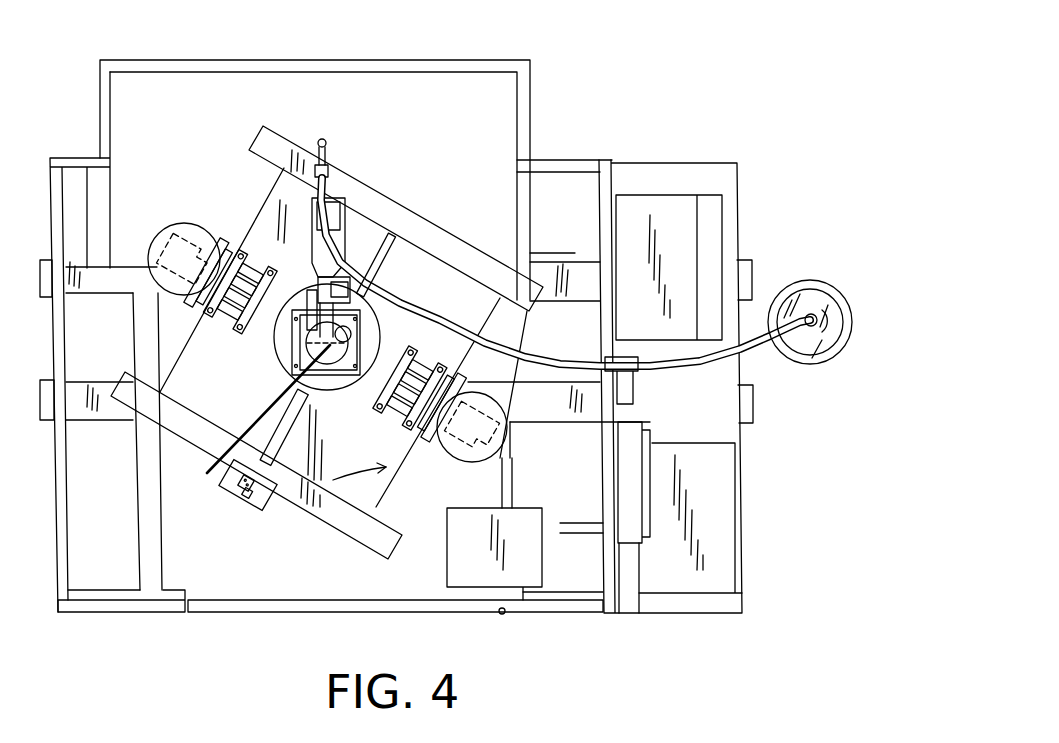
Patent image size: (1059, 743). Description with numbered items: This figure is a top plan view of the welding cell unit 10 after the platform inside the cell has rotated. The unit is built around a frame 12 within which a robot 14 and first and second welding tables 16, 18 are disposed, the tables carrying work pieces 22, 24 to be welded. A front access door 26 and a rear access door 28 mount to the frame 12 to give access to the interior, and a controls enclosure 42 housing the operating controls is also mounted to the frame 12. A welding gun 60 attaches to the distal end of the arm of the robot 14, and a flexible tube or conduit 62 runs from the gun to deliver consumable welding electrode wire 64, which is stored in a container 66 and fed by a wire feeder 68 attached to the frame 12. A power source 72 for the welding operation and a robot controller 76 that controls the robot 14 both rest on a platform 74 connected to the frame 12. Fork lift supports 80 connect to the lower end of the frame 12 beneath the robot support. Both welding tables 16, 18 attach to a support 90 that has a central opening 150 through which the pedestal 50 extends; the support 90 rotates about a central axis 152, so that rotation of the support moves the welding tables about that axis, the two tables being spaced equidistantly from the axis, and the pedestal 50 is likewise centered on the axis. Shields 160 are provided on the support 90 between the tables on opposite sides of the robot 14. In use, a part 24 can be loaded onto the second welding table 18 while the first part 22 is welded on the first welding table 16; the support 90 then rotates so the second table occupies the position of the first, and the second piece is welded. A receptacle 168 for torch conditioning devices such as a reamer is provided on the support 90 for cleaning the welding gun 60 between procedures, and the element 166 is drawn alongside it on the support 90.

The welding cell unit 10 is at (716, 50).
The frame 12 is at (542, 68).
The robot 14 is at (345, 215).
The first welding table 16 is at (168, 230).
The second welding table 18 is at (470, 457).
The work piece 22 is at (208, 232).
The work piece 24 is at (440, 450).
The front access door 26 is at (238, 610).
The rear access door 28 is at (230, 67).
The controls enclosure 42 is at (630, 537).
The pedestal 50 is at (300, 345).
The welding gun 60 is at (334, 147).
The flexible tube or conduit 62 is at (352, 233).
The consumable welding electrode wire 64 is at (832, 332).
The container 66 is at (823, 285).
The wire feeder 68 is at (628, 365).
The power source 72 is at (727, 517).
The platform 74 is at (728, 433).
The robot controller 76 is at (672, 205).
The fork lift supports 80 is at (80, 292).
The support 90 is at (345, 523).
The central opening 150 is at (370, 332).
The central axis 152 is at (228, 478).
The shields 160 is at (378, 258).
The slide block 166 is at (250, 497).
The receptacle 168 is at (247, 490).